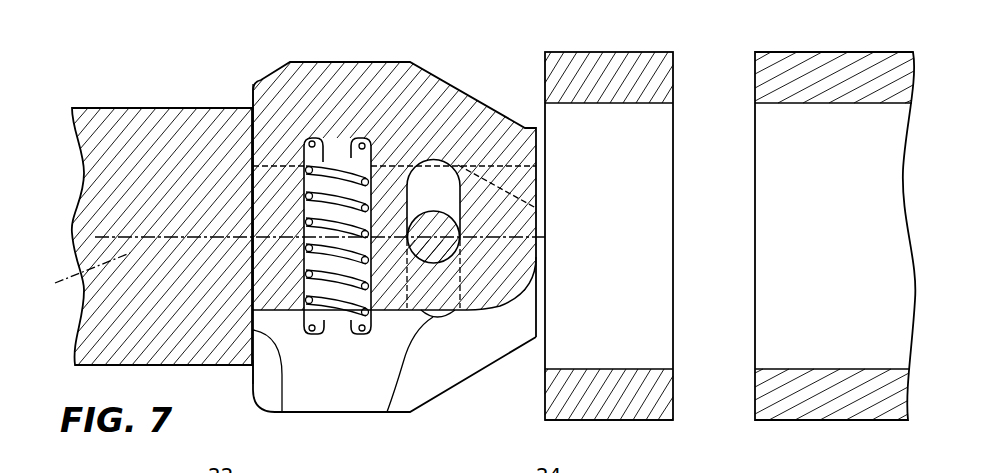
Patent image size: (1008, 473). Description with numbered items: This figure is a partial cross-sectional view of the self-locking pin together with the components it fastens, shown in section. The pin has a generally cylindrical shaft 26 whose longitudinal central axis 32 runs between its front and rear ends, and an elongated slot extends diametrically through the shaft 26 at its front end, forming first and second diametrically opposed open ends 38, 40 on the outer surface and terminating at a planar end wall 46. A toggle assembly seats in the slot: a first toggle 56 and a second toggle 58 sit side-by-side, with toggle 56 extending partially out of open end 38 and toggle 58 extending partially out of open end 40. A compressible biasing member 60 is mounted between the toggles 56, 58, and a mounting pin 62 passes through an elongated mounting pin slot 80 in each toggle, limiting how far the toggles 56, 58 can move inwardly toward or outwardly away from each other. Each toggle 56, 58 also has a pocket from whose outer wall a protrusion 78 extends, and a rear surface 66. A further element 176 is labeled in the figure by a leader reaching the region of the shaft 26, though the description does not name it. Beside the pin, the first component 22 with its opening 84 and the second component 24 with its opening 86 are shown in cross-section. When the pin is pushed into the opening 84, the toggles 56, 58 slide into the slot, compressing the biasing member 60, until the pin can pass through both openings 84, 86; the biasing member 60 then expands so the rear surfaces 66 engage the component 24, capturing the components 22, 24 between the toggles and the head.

The first component 22 is at (628, 52).
The second component 24 is at (818, 52).
The shaft 26 is at (118, 313).
The longitudinal central axis 32 is at (79, 278).
The first open end 38 is at (251, 97).
The second open end 40 is at (250, 373).
The end wall 46 is at (282, 412).
The first toggle 56 is at (353, 50).
The second toggle 58 is at (472, 388).
The compressible biasing member 60 is at (330, 217).
The mounting pin 62 is at (453, 213).
The rear surface 66 is at (253, 90).
The protrusion 78 is at (337, 163).
The mounting pin slot 80 is at (457, 195).
The opening 84 is at (648, 370).
The opening 86 is at (818, 370).
The bore axis 176 is at (220, 237).